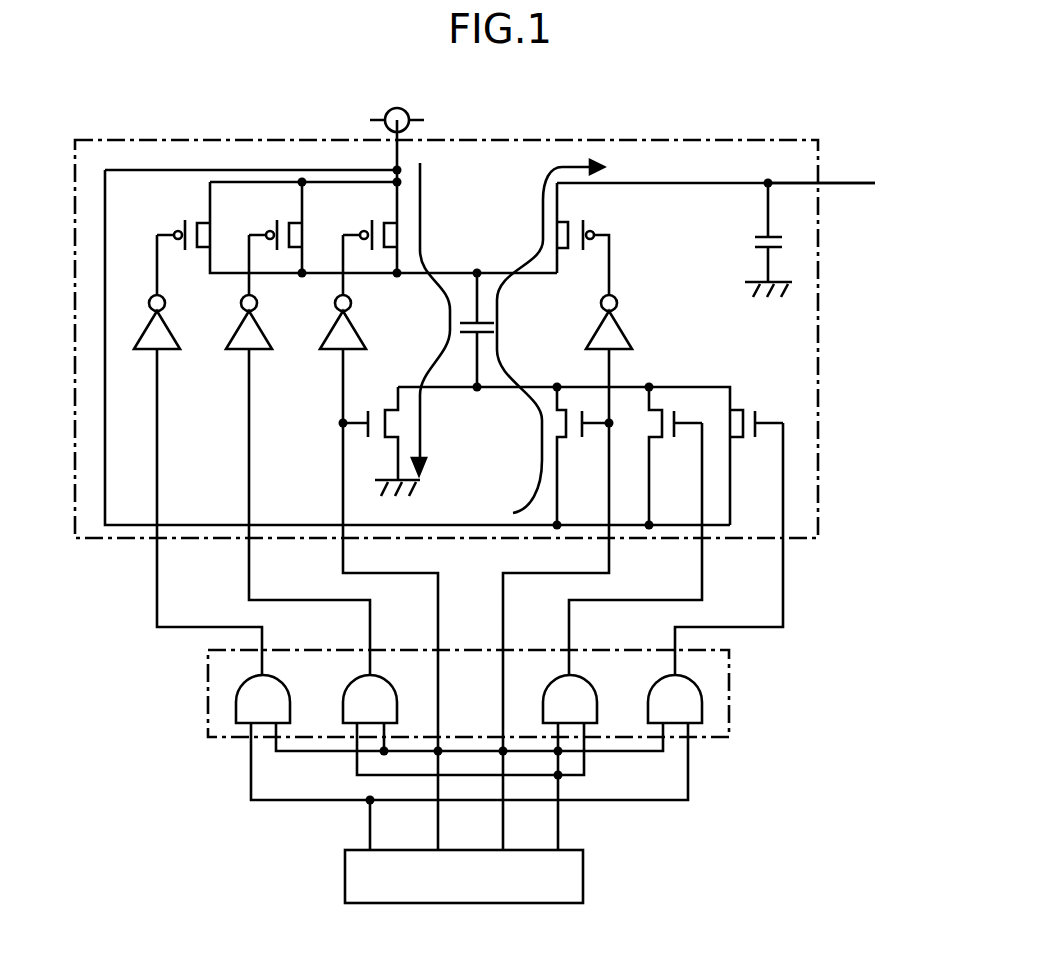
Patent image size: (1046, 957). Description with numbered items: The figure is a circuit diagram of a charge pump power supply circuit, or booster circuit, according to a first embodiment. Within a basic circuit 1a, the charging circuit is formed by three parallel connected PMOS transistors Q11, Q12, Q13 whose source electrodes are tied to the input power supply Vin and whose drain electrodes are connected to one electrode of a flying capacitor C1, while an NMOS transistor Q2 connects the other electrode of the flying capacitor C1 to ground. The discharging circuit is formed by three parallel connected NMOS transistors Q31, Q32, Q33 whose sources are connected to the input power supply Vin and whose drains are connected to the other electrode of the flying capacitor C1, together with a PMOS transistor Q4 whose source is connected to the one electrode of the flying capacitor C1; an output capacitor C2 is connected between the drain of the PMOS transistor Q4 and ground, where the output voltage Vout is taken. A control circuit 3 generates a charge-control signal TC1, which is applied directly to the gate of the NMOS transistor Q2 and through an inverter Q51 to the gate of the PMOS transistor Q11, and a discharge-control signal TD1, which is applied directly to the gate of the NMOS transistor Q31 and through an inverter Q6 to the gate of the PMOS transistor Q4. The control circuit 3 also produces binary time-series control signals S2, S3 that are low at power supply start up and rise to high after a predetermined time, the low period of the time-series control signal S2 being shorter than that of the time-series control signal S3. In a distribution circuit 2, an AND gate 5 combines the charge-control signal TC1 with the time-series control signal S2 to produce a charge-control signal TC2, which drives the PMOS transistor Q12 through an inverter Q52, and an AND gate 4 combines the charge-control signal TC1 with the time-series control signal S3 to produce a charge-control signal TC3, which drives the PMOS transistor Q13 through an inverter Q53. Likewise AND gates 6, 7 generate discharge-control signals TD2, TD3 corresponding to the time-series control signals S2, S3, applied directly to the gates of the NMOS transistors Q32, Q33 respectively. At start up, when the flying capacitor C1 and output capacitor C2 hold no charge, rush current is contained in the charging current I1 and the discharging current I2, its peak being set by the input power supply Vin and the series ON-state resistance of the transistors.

The basic circuit 1a is at (540, 140).
The distribution circuit 2 is at (729, 703).
The control circuit 3 is at (583, 875).
The AND gate 4 is at (284, 684).
The AND gate 5 is at (391, 684).
The AND gate 6 is at (591, 684).
The AND gate 7 is at (696, 684).
The PMOS transistor Q11 is at (366, 246).
The PMOS transistor Q12 is at (271, 246).
The PMOS transistor Q13 is at (176, 246).
The PMOS transistor Q4 is at (583, 246).
The NMOS transistor Q2 is at (388, 441).
The NMOS transistor Q31 is at (583, 456).
The NMOS transistor Q32 is at (675, 456).
The NMOS transistor Q33 is at (756, 437).
The inverter Q51 is at (330, 340).
The inverter Q52 is at (237, 340).
The inverter Q53 is at (145, 340).
The inverter Q6 is at (630, 323).
The flying capacitor C1 is at (462, 330).
The output capacitor C2 is at (755, 240).
The input power supply Vin is at (396, 103).
The output voltage Vout is at (849, 185).
The charging current I1 is at (432, 319).
The discharging current I2 is at (550, 336).
The charge-control signal TC1 is at (371, 561).
The charge-control signal TC2 is at (296, 588).
The charge-control signal TC3 is at (191, 611).
The discharge-control signal TD1 is at (542, 561).
The discharge-control signal TD2 is at (667, 588).
The discharge-control signal TD3 is at (747, 613).
The time-series control signal S2 is at (532, 830).
The time-series control signal S3 is at (345, 830).